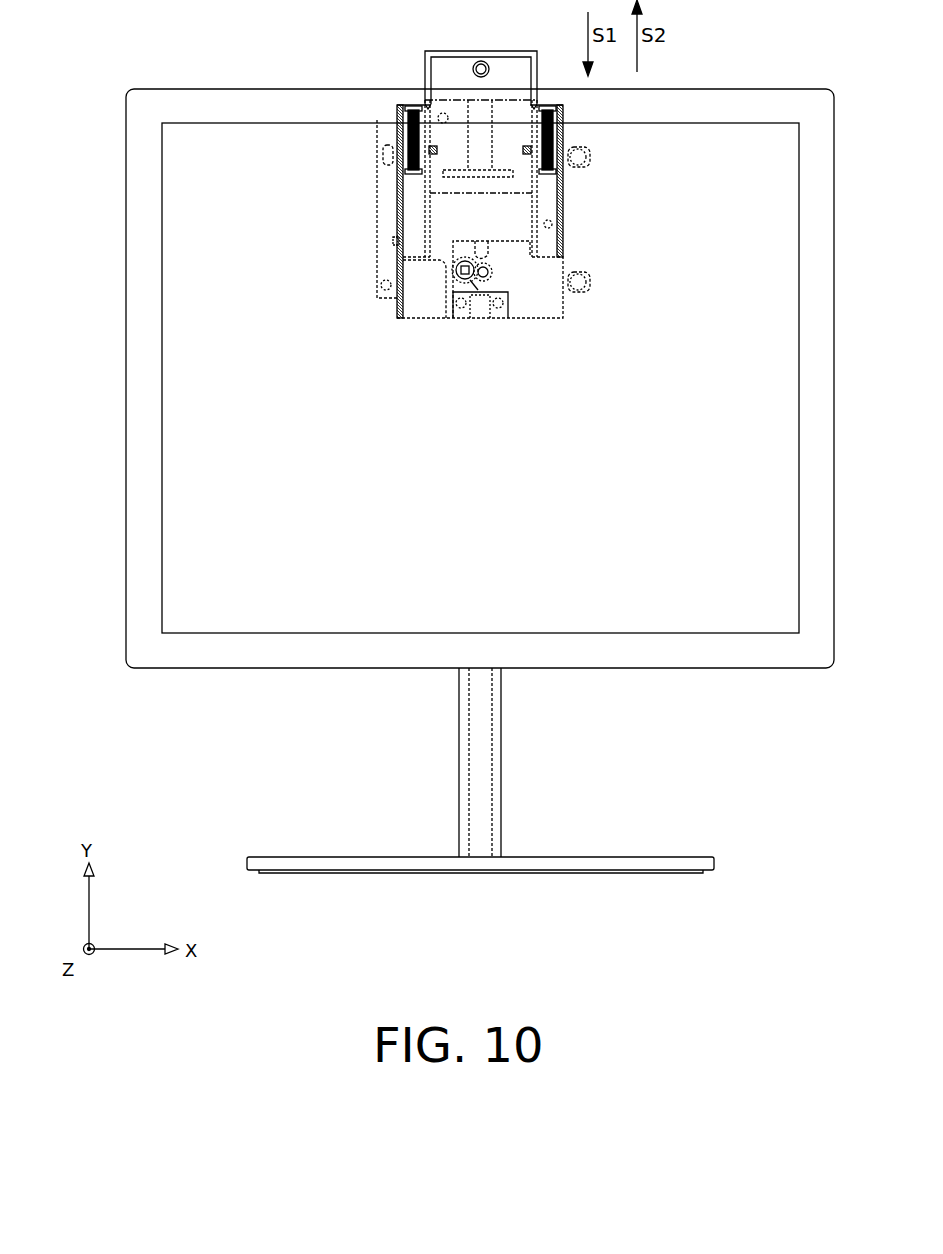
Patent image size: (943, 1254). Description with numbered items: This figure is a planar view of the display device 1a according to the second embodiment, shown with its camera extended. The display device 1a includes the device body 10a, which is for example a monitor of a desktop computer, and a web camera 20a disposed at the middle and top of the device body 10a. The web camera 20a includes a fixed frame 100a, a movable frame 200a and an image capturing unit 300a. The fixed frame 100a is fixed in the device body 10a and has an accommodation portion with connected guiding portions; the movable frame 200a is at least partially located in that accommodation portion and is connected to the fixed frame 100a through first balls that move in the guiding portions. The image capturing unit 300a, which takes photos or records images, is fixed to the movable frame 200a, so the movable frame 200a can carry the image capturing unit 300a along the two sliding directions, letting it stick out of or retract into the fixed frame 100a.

The display device 1a is at (61, 34).
The device body 10a is at (140, 257).
The web camera 20a is at (371, 236).
The fixed frame 100a is at (377, 201).
The movable frame 200a is at (438, 76).
The image capturing unit 300a is at (482, 61).